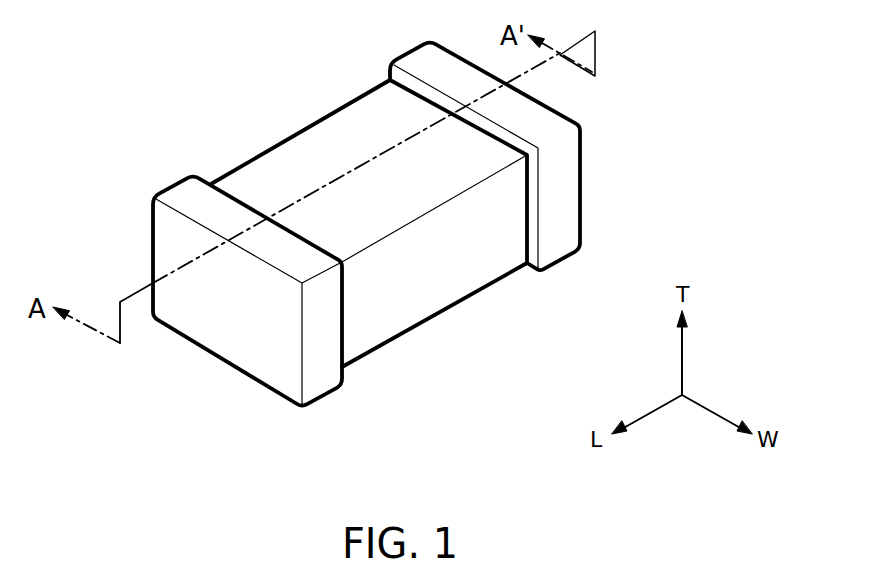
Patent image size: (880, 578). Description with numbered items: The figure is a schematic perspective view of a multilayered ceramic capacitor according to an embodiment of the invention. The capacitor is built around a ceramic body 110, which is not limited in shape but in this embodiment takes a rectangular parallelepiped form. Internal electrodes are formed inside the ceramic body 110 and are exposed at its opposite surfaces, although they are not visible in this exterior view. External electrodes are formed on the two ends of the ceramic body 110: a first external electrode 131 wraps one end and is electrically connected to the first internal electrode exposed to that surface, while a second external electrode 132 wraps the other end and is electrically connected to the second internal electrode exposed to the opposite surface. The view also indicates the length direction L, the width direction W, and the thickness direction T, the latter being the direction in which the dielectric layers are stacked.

The ceramic body 110 is at (320, 137).
The first external electrode 131 is at (317, 390).
The second external electrode 132 is at (558, 253).